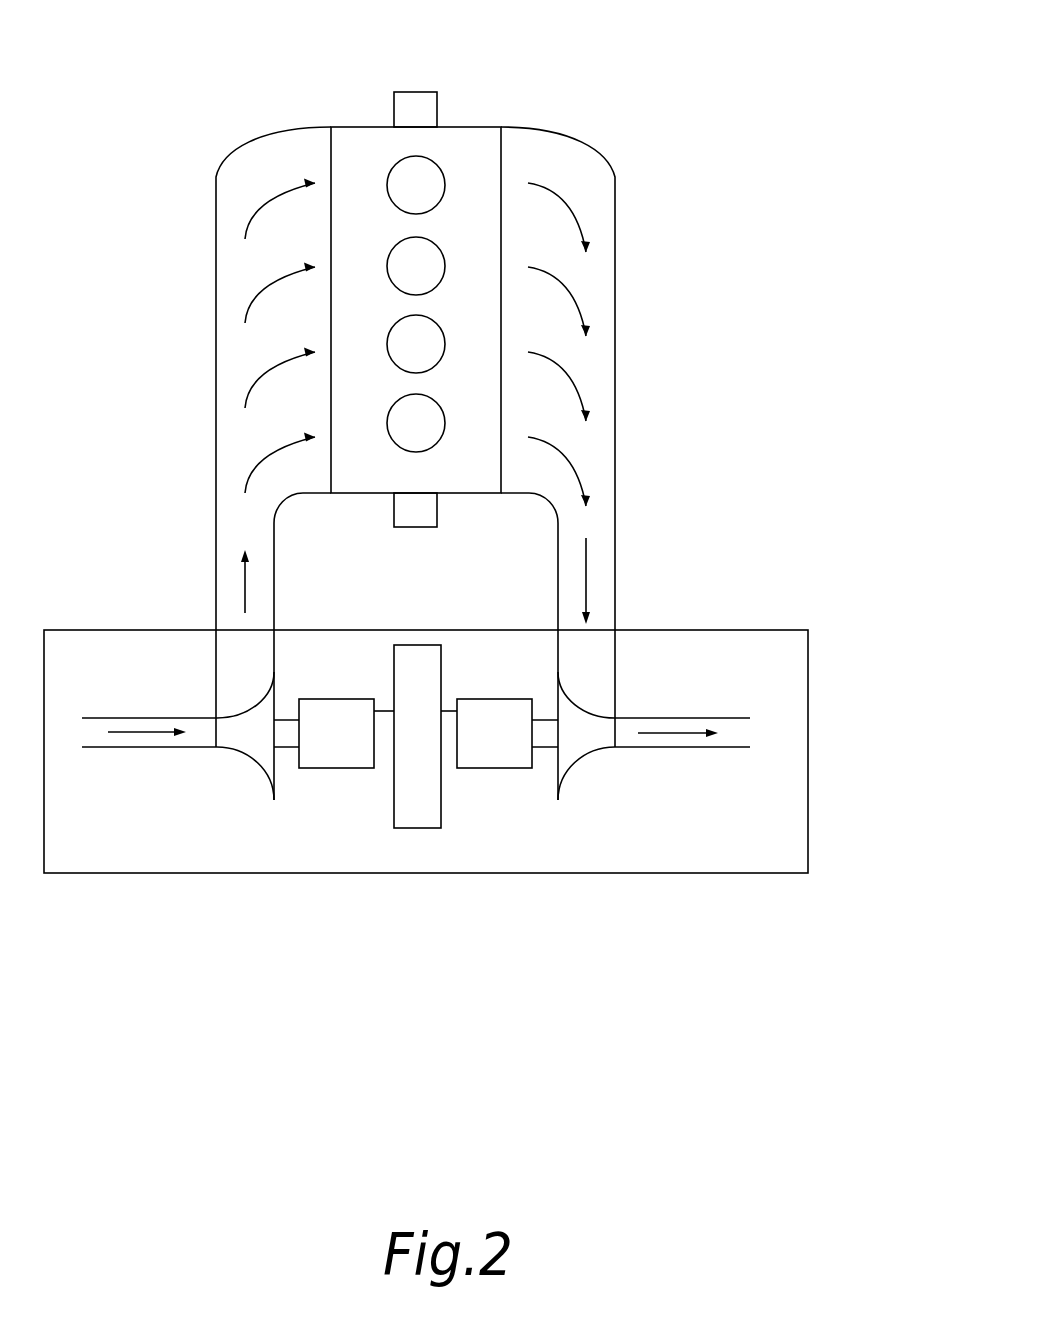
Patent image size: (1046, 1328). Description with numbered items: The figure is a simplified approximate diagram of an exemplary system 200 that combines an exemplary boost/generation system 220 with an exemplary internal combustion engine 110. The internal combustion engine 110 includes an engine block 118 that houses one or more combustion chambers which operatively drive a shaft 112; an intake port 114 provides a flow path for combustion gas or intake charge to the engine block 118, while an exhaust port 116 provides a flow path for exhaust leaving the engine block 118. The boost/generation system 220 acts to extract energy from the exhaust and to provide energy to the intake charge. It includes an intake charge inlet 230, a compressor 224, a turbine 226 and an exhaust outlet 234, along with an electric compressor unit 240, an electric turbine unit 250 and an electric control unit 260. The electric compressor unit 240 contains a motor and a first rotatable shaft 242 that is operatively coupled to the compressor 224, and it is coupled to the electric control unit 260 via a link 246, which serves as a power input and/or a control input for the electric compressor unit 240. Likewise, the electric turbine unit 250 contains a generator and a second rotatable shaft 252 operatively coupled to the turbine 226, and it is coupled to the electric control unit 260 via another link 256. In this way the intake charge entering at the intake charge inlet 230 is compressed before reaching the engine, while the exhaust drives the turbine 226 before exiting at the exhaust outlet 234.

The system 200 is at (609, 36).
The internal combustion engine 110 is at (372, 125).
The shaft 112 is at (417, 90).
The intake port 114 is at (238, 148).
The exhaust port 116 is at (608, 162).
The engine block 118 is at (441, 489).
The boost/generation system 220 is at (683, 628).
The compressor 224 is at (275, 683).
The turbine 226 is at (560, 680).
The intake charge inlet 230 is at (172, 717).
The exhaust outlet 234 is at (683, 717).
The electric compressor unit 240 is at (363, 770).
The first rotatable shaft 242 is at (287, 753).
The link 246 is at (385, 710).
The electric turbine unit 250 is at (483, 770).
The second rotatable shaft 252 is at (540, 752).
The link 256 is at (448, 710).
The electric control unit 260 is at (403, 830).